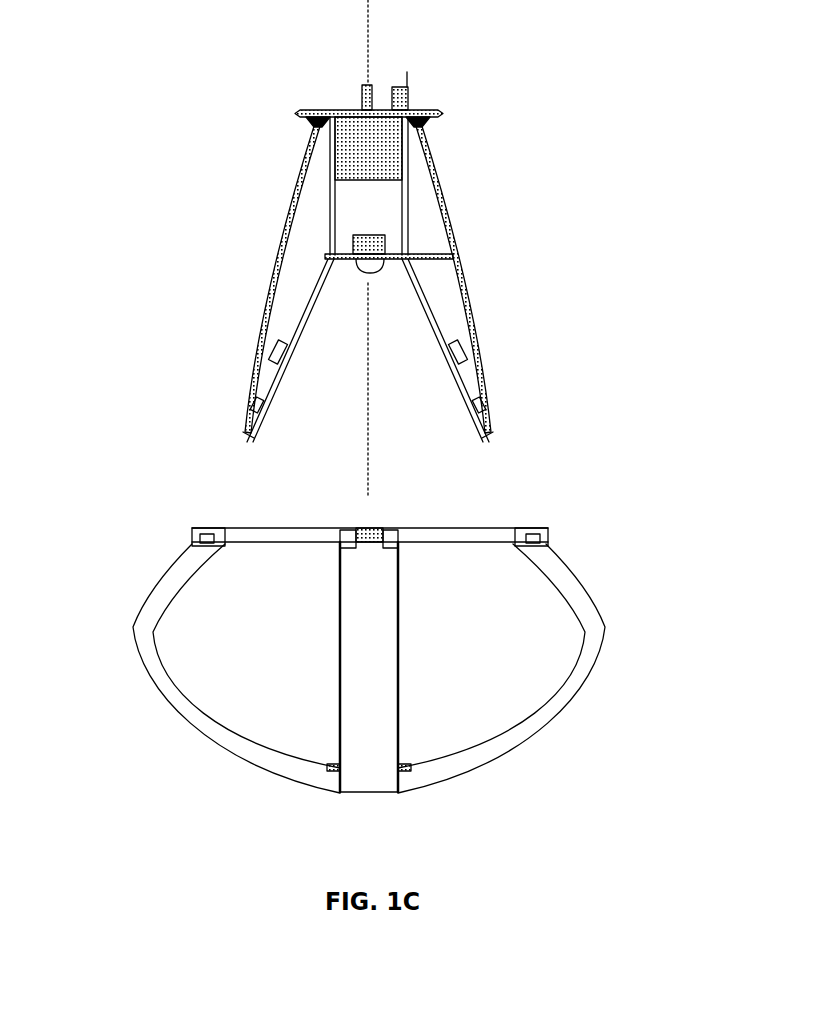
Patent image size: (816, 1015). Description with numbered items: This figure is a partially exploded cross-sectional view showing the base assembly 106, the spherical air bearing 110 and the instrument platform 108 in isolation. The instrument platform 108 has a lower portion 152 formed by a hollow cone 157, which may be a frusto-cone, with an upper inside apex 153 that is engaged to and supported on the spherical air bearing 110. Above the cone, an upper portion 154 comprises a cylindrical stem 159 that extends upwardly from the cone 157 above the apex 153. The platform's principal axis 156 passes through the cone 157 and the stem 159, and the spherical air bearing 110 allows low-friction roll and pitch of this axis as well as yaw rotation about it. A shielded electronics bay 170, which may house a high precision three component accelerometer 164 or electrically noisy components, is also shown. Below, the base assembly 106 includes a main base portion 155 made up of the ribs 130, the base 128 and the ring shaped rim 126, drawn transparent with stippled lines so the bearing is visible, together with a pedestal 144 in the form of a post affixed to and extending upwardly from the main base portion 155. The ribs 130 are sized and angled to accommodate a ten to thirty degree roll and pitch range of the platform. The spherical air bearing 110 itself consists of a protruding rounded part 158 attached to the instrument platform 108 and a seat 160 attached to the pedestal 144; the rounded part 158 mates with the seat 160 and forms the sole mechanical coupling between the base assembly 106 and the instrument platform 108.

The base assembly 106 is at (150, 584).
The instrument platform 108 is at (240, 368).
The spherical air bearing 110 is at (357, 279).
The ring shaped rim 126 is at (252, 546).
The base 128 is at (402, 794).
The ribs 130 is at (178, 690).
The pedestal 144 is at (368, 637).
The lower portion 152 is at (510, 258).
The upper inside apex 153 is at (335, 268).
The upper portion 154 is at (480, 117).
The main base portion 155 is at (600, 790).
The principal axis 156 is at (371, 20).
The hollow cone 157 is at (297, 328).
The protruding rounded part 158 is at (373, 268).
The stem 159 is at (330, 216).
The seat 160 is at (383, 530).
The three component accelerometer 164 is at (367, 235).
The shielded electronics bay 170 is at (348, 188).